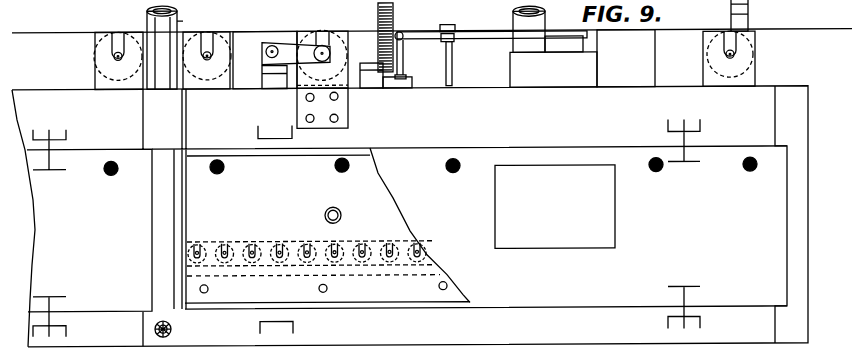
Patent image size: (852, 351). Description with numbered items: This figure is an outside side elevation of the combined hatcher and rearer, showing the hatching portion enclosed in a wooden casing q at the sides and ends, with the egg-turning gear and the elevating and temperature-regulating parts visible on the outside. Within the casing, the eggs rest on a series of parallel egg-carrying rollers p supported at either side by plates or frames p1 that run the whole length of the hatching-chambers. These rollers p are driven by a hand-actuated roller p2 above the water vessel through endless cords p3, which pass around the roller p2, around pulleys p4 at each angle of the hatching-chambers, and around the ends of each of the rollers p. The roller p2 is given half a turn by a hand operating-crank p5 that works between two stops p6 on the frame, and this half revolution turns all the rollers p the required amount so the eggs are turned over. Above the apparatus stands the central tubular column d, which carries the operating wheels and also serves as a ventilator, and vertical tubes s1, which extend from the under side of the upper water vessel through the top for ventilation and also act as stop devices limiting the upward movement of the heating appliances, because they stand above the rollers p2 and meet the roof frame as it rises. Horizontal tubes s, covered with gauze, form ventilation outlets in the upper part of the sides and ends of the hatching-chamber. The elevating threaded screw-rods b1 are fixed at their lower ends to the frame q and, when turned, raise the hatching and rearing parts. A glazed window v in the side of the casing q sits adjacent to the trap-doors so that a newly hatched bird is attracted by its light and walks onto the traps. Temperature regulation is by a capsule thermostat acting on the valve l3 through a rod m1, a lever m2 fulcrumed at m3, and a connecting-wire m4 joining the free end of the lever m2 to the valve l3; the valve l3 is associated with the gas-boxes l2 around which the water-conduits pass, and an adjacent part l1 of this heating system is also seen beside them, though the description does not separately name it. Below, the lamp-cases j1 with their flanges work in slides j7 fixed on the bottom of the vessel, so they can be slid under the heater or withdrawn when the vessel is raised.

The endless cords p3 is at (66, 33).
The central tubular column d is at (147, 22).
The vertical tubes s1 is at (177, 22).
The pulleys p4 is at (103, 61).
The hand-actuated roller p2 is at (313, 33).
The hand operating-crank p5 is at (266, 50).
The stops p6 is at (270, 90).
The screw-rods b1 is at (378, 18).
The fulcrum m3 is at (403, 41).
The lever m2 is at (503, 36).
The rod m1 is at (453, 67).
The connecting-wire m4 is at (583, 50).
The cylinder l1 is at (545, 27).
The gas-boxes l2 is at (553, 69).
The valve l3 is at (626, 69).
The wooden casing q is at (413, 216).
The horizontal tubes s is at (106, 176).
The glazed window v is at (555, 207).
The egg-carrying rollers p is at (327, 250).
The plates or frames p1 is at (400, 246).
The slides j7 is at (478, 348).
The lamp-cases j1 is at (580, 350).